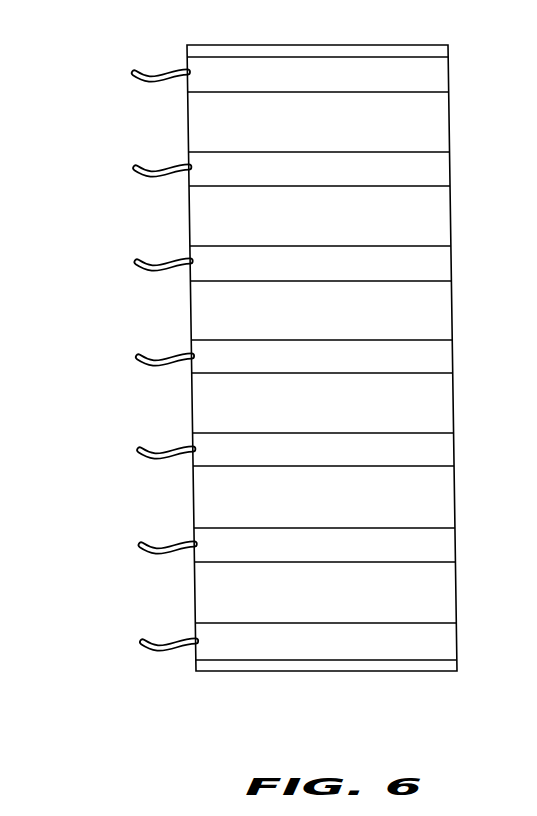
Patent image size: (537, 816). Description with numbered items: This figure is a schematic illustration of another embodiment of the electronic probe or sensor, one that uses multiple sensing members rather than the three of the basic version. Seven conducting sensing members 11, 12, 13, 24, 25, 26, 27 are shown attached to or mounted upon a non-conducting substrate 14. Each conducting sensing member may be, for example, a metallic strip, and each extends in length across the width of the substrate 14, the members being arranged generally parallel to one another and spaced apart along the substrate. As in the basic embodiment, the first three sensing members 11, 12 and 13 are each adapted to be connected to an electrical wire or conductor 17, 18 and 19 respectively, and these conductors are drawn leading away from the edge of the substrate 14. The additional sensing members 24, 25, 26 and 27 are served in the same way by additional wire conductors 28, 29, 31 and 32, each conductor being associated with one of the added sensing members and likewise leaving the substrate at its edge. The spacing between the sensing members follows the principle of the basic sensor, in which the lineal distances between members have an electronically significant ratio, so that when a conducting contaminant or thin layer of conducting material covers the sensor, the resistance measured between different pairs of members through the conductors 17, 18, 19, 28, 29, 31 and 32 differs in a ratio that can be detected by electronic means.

The conducting sensing member 11 is at (437, 75).
The conducting sensing member 12 is at (439, 170).
The conducting sensing member 13 is at (440, 264).
The non-conducting substrate 14 is at (363, 671).
The electrical wire conductor 17 is at (138, 69).
The electrical wire conductor 18 is at (140, 164).
The electrical wire conductor 19 is at (141, 258).
The sensing member 24 is at (441, 358).
The sensing member 25 is at (443, 451).
The sensing member 26 is at (444, 546).
The sensing member 27 is at (445, 641).
The wire conductor 28 is at (142, 353).
The wire conductor 29 is at (144, 446).
The wire conductor 31 is at (145, 541).
The wire conductor 32 is at (147, 638).